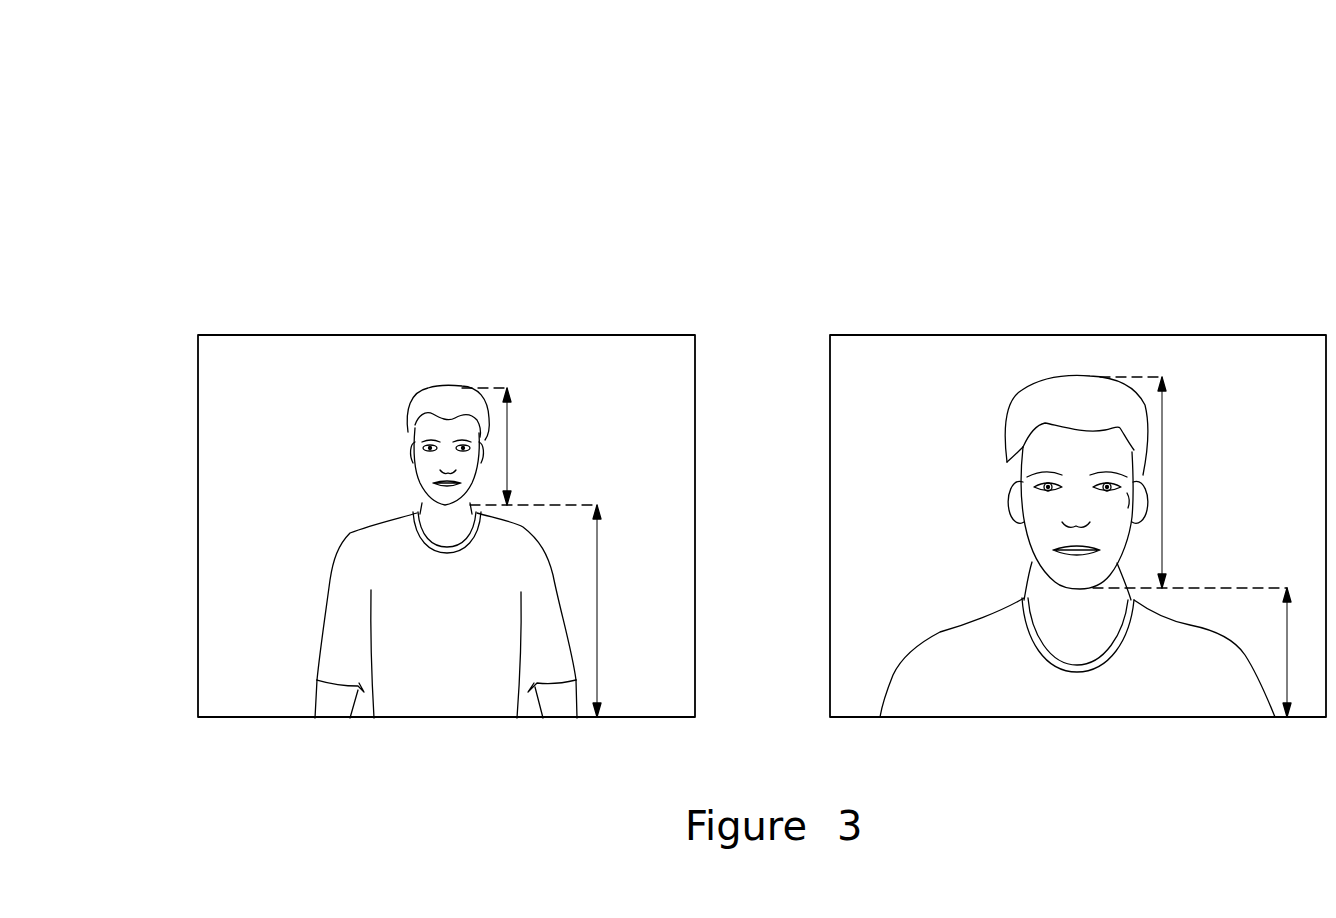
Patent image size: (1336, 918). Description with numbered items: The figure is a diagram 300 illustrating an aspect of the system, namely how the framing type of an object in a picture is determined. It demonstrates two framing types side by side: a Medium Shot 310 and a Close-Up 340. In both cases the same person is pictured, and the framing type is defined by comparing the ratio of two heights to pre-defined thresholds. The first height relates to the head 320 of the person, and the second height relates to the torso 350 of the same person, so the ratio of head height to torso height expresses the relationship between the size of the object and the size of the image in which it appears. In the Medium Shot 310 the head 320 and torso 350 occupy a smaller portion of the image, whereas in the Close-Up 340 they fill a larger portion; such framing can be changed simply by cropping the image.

The diagram 300 is at (212, 118).
The Medium Shot 310 is at (272, 335).
The head 320 is at (427, 392).
The Close-Up 340 is at (905, 335).
The torso 350 is at (375, 523).